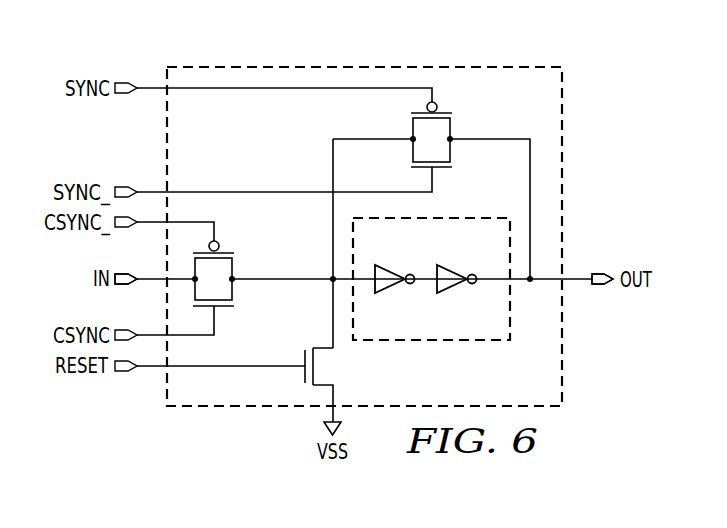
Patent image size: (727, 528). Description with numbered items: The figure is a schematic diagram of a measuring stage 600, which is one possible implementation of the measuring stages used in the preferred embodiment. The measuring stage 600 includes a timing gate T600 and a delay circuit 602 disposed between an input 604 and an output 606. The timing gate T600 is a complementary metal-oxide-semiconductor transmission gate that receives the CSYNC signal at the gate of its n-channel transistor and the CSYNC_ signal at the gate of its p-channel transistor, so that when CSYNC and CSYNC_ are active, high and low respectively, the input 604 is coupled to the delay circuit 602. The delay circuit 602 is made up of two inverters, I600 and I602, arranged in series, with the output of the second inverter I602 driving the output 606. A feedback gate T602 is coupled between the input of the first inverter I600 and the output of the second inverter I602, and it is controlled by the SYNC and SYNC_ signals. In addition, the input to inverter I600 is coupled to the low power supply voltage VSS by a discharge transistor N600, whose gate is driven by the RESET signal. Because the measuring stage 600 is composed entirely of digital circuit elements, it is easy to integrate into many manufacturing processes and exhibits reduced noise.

The measuring stage 600 is at (562, 320).
The delay circuit 602 is at (466, 217).
The input 604 is at (118, 285).
The output 606 is at (596, 272).
The timing gate T600 is at (234, 268).
The feedback gate T602 is at (453, 128).
The inverter I600 is at (408, 250).
The inverter I602 is at (455, 294).
The discharge transistor N600 is at (305, 352).